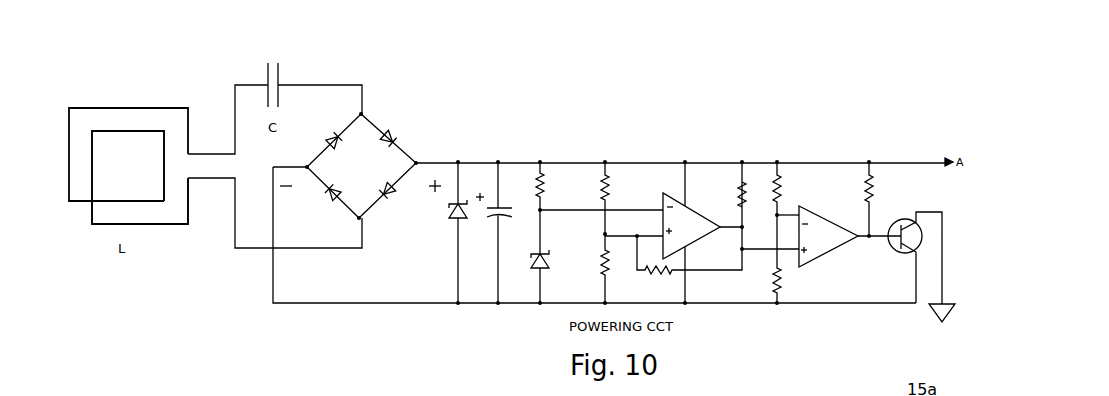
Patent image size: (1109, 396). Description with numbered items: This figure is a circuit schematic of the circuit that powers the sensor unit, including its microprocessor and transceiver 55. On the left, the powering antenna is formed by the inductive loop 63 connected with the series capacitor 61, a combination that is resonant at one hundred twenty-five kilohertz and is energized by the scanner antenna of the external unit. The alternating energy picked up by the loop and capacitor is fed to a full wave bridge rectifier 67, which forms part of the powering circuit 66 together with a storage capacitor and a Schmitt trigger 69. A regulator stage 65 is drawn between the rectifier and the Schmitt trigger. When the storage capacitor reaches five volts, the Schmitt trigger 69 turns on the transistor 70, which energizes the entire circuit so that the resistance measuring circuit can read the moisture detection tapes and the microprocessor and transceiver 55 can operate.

The microprocessor and transceiver 55 is at (155, 230).
The inductive loop 63 is at (117, 103).
The series capacitor 61 is at (283, 75).
The full wave bridge rectifier 67 is at (392, 130).
The voltage regulator circuit 65 is at (508, 175).
The Schmitt trigger 69 is at (663, 187).
The powering circuit 66 is at (760, 152).
The transistor 70 is at (928, 224).